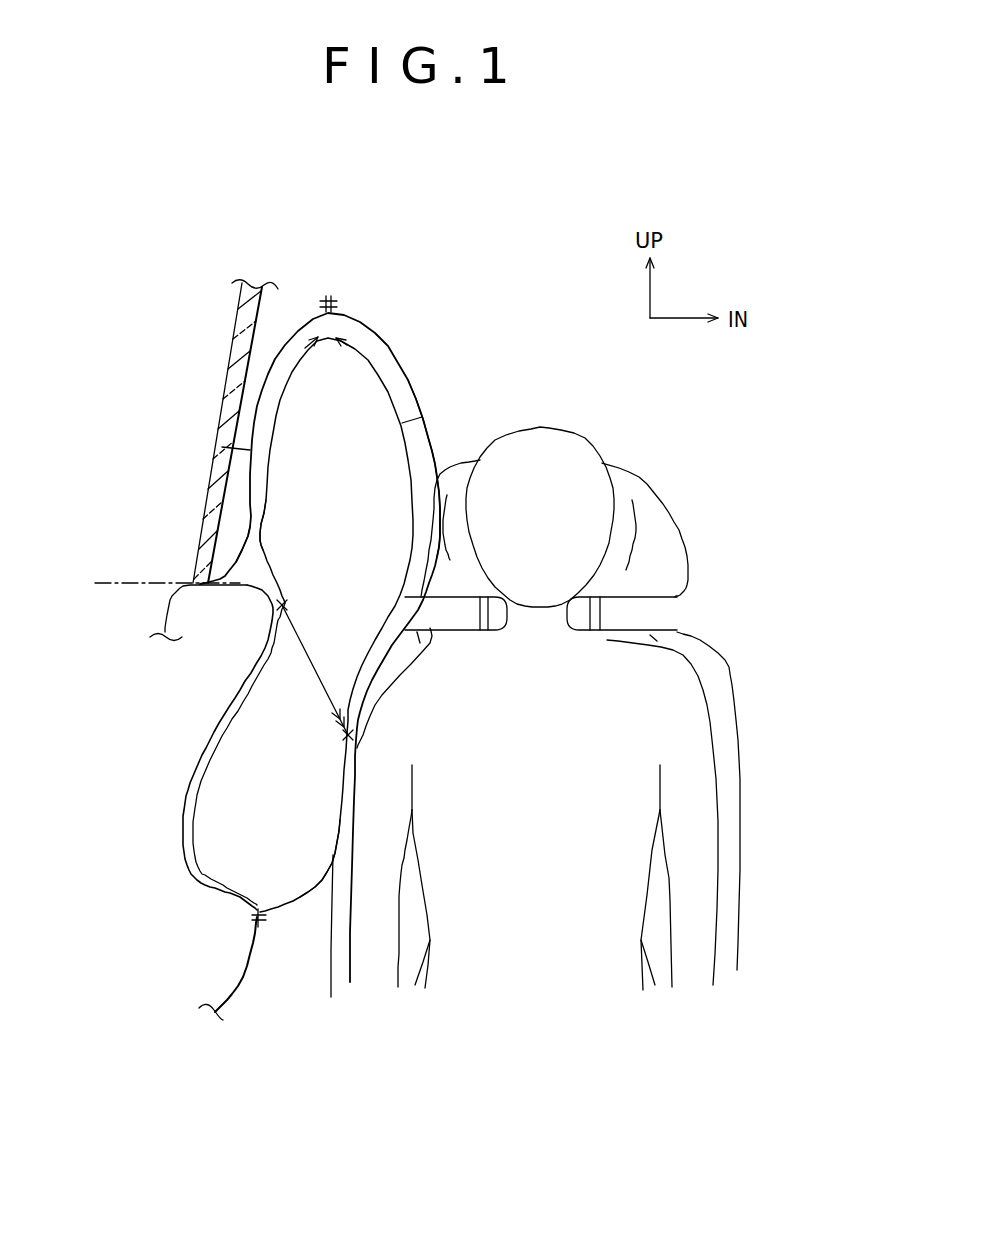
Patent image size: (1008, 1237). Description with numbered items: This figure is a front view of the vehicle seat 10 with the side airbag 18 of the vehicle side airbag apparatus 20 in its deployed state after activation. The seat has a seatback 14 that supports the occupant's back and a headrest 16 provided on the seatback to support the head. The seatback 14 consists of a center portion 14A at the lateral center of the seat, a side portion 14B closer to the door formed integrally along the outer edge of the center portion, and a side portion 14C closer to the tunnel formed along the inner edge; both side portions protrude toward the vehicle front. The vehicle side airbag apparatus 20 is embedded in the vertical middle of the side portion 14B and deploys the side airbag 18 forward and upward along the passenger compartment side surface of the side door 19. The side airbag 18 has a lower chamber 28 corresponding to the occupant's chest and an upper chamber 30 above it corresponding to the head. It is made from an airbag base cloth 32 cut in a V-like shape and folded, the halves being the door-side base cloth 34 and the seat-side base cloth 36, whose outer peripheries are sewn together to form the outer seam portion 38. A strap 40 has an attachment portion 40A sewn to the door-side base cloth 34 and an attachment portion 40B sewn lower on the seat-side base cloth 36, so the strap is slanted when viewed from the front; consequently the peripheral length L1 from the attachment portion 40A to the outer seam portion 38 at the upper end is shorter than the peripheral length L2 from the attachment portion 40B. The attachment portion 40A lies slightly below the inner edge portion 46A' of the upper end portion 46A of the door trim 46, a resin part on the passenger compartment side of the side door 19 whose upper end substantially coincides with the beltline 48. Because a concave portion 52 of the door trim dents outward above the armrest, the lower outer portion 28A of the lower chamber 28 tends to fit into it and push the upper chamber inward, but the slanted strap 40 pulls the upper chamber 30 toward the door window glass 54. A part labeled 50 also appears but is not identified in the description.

The vehicle seat 10 is at (533, 728).
The seatback 14 is at (737, 801).
The center portion 14A is at (569, 609).
The side portion 14B is at (346, 812).
The side portion 14C is at (707, 812).
The headrest 16 is at (580, 528).
The side airbag 18 is at (326, 633).
The side door 19 is at (164, 613).
The vehicle side airbag apparatus 20 is at (419, 343).
The lower chamber 28 is at (200, 747).
The lower outer portion 28A is at (166, 747).
The upper chamber 30 is at (360, 617).
The airbag base cloth 32 is at (338, 431).
The door-side base cloth 34 is at (203, 431).
The seat-side base cloth 36 is at (478, 468).
The outer seam portion 38 is at (317, 591).
The strap 40 is at (300, 670).
The attachment portion 40A is at (325, 600).
The attachment portion 40B is at (306, 737).
The door trim 46 is at (253, 969).
The upper end portion 46A is at (214, 541).
The inner edge portion 46A' is at (302, 549).
The beltline 48 is at (167, 547).
The lower chamber bottom portion 50 is at (286, 851).
The concave portion 52 is at (203, 754).
The door window glass 54 is at (190, 433).
The peripheral length L1 is at (200, 435).
The peripheral length L2 is at (446, 397).